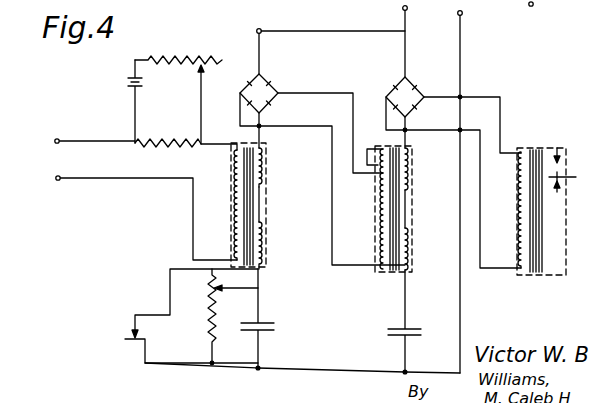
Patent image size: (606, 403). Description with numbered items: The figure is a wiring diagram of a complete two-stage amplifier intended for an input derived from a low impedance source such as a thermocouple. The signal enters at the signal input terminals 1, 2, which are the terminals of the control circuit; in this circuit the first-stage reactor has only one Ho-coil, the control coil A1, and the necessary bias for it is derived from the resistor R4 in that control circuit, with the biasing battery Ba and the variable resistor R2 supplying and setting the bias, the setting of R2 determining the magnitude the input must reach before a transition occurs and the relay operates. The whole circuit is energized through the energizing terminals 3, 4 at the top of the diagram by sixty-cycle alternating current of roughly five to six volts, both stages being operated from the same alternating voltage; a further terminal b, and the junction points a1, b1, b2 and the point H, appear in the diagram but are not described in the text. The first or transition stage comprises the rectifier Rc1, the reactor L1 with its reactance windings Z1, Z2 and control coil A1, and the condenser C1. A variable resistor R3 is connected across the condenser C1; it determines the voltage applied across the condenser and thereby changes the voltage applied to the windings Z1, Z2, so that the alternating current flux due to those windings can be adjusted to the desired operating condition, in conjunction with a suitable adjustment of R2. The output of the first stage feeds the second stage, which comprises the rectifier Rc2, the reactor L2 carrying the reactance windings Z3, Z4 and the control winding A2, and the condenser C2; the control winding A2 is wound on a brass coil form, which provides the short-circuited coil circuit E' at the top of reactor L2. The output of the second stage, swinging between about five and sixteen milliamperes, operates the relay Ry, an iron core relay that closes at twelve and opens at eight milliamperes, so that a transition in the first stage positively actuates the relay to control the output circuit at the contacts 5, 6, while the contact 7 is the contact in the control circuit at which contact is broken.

The signal input terminal 1 is at (88, 140).
The signal input terminal 2 is at (139, 215).
The energizing terminal 3 is at (403, 38).
The energizing terminal 4 is at (457, 186).
The terminal b is at (536, 6).
The rectifier output junction a1 is at (331, 51).
The lower junction b1 is at (302, 364).
The lower junction b2 is at (413, 367).
The biasing battery Ba is at (146, 101).
The variable resistor R2 is at (178, 92).
The resistor R4 is at (186, 136).
The variable resistor R3 is at (233, 317).
The rectifier Rc1 is at (322, 169).
The rectifier Rc2 is at (453, 172).
The control coil A1 is at (242, 206).
The reactance winding Z1 is at (272, 167).
The reactor L1 is at (273, 204).
The reactance winding Z2 is at (272, 245).
The control winding A2 is at (398, 204).
The short-circuited coil circuit E' is at (369, 151).
The reactance winding Z3 is at (419, 169).
The reactor L2 is at (422, 208).
The reactance winding Z4 is at (418, 249).
The relay Ry is at (537, 199).
The output circuit contact 5 is at (556, 143).
The output circuit contact 6 is at (568, 178).
The contact 7 is at (554, 197).
The terminal H is at (182, 316).
The condenser C1 is at (268, 318).
The condenser C2 is at (408, 321).